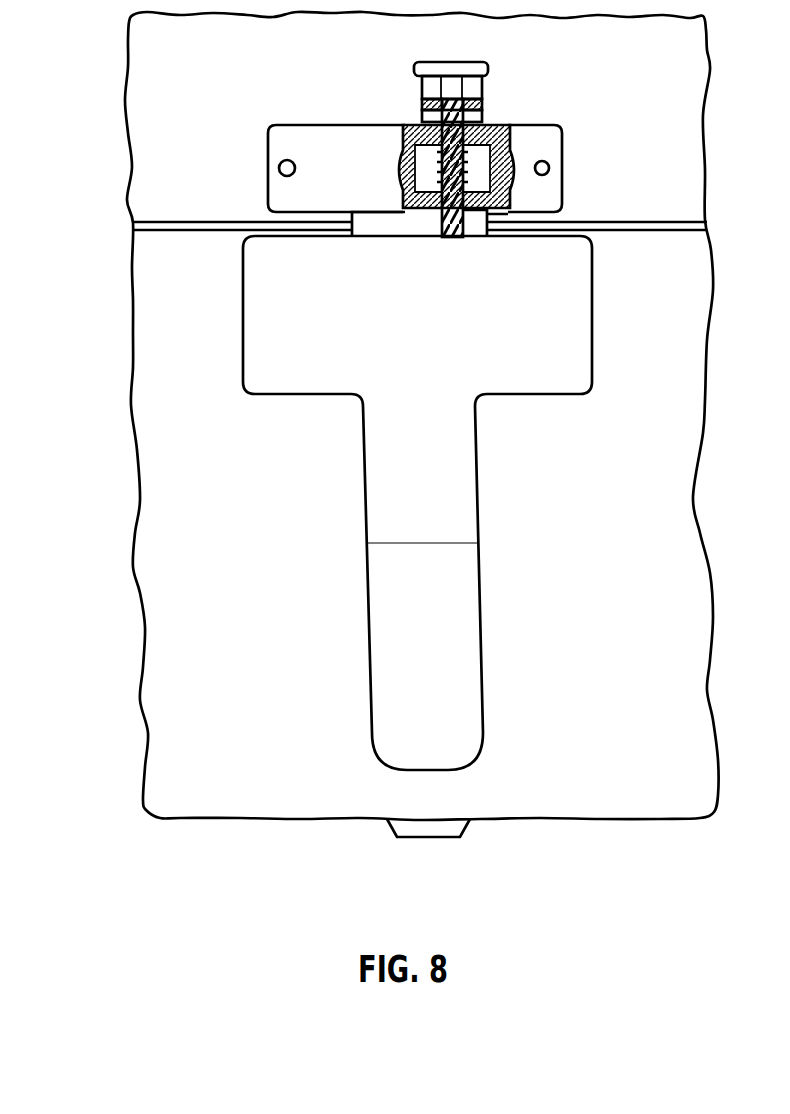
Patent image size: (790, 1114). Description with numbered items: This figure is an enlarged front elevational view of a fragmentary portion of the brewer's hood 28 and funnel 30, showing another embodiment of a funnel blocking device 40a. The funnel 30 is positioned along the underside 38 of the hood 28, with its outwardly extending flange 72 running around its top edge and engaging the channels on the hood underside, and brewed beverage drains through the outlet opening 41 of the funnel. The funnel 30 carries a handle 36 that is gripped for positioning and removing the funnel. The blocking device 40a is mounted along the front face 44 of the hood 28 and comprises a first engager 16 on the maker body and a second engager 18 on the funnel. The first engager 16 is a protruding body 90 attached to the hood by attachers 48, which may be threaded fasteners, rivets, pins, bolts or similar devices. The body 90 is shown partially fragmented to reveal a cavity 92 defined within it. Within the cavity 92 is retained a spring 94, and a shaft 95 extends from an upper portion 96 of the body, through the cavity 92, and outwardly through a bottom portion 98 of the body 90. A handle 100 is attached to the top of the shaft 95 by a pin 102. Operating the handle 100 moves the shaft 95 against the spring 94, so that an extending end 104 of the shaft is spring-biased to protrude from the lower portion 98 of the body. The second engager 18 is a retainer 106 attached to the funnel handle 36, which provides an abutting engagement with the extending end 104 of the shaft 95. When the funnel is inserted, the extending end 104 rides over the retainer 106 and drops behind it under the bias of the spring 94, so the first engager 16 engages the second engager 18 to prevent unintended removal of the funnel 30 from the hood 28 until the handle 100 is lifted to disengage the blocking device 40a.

The first engager 16 is at (272, 80).
The second engager 18 is at (401, 258).
The hood 28 is at (148, 151).
The funnel 30 is at (162, 627).
The handle 36 is at (369, 642).
The underside 38 is at (170, 233).
The blocking device 40a is at (592, 82).
The outlet opening 41 is at (432, 840).
The front face 44 is at (138, 72).
The attacher 48 is at (287, 158).
The outwardly extending flange 72 is at (640, 221).
The protruding body 90 is at (267, 168).
The cavity 92 is at (512, 148).
The spring 94 is at (540, 125).
The shaft 95 is at (414, 126).
The upper portion 96 is at (531, 126).
The bottom portion 98 is at (540, 233).
The handle 100 is at (443, 61).
The pin 102 is at (418, 117).
The extending end 104 is at (455, 231).
The retainer 106 is at (360, 228).